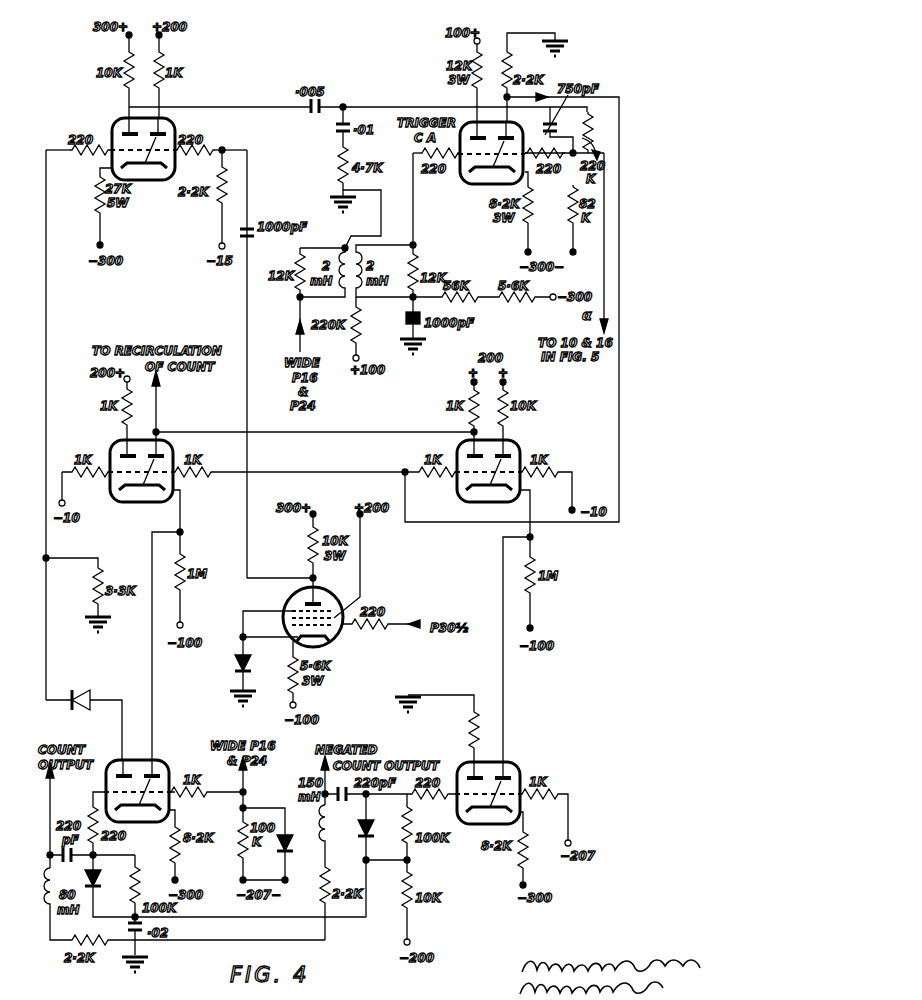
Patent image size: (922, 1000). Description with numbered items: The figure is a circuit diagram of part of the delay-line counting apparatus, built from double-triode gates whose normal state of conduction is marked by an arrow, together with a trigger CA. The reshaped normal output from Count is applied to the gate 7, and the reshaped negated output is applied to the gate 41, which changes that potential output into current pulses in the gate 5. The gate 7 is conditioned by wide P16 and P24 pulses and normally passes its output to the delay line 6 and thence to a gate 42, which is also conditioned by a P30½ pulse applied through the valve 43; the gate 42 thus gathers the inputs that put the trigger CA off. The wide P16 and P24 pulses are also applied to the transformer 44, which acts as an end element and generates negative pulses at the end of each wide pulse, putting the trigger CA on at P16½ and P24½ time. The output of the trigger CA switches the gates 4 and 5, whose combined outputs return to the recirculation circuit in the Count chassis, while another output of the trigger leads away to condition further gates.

The gate 42 is at (170, 134).
The transformer 44 is at (356, 259).
The gate 4 is at (110, 450).
The gate 5 is at (522, 452).
The valve 43 is at (290, 612).
The delay line 6 is at (83, 694).
The gate 7 is at (142, 762).
The gate 41 is at (515, 774).